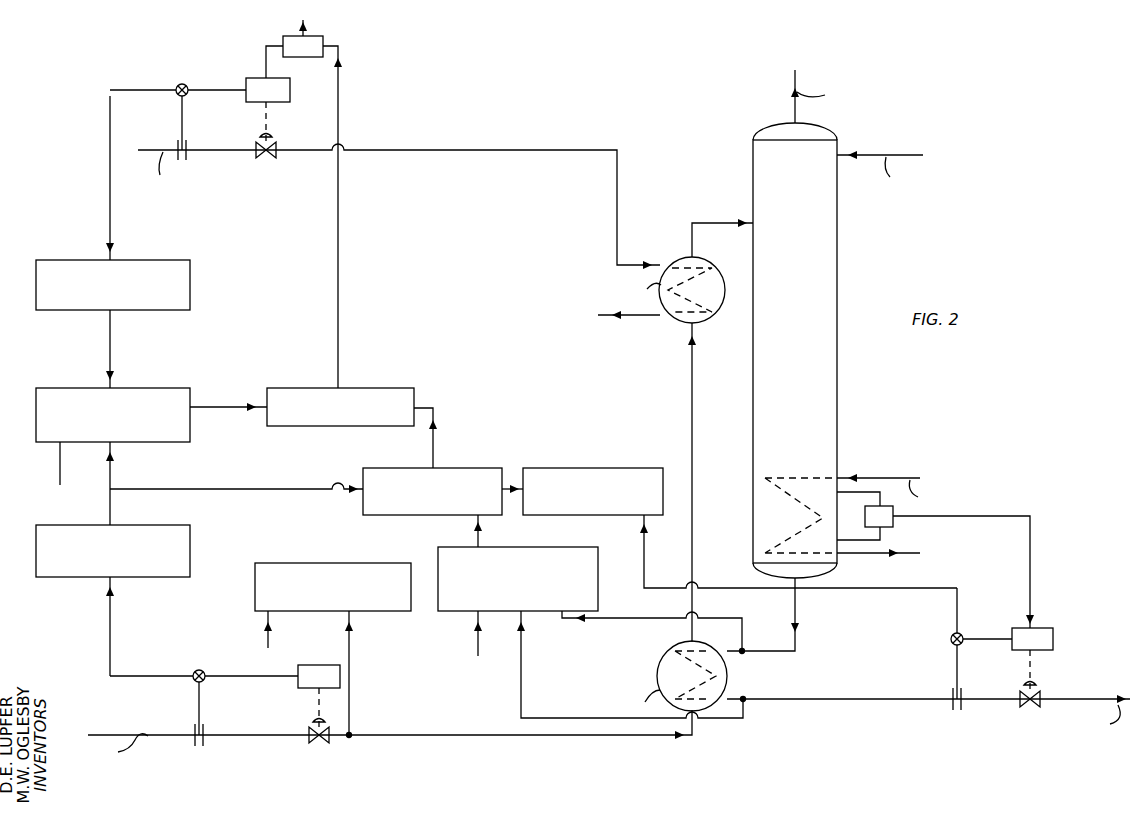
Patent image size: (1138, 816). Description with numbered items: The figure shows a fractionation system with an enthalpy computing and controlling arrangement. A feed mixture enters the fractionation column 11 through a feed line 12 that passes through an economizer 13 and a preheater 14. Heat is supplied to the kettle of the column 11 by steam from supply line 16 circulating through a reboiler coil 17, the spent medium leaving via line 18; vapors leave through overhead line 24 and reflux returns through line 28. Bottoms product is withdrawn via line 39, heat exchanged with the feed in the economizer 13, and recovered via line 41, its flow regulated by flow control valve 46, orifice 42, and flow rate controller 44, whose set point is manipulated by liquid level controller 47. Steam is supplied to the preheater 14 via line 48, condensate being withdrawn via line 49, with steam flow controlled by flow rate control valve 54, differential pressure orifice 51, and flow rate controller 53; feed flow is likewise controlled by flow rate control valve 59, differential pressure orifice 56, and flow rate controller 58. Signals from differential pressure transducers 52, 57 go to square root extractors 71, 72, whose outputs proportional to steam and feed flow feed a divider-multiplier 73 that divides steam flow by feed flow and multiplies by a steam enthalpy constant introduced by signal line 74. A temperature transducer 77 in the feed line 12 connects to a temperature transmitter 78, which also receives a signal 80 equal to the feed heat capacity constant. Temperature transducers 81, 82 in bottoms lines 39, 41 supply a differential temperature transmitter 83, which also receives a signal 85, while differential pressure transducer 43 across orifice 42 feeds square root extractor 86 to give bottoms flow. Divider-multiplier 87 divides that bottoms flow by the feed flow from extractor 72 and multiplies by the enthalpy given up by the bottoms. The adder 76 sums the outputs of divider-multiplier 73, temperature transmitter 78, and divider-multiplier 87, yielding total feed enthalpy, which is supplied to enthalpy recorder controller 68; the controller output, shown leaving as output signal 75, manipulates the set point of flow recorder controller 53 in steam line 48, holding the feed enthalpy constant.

The fractionation column 11 is at (753, 147).
The feed line 12 is at (445, 736).
The economizer 13 is at (700, 710).
The preheater 14 is at (718, 312).
The supply line 16 is at (887, 478).
The reboiler coil 17 is at (820, 478).
The line 18 is at (895, 556).
The overhead line 24 is at (790, 97).
The reflux line 28 is at (900, 155).
The bottoms product line 39 is at (800, 632).
The bottoms product line 41 is at (802, 702).
The orifice 42 is at (950, 712).
The differential pressure transducer 43 is at (951, 643).
The flow rate controller 44 is at (1050, 628).
The flow control valve 46 is at (1020, 705).
The liquid level controller 47 is at (893, 526).
The steam supply line 48 is at (410, 150).
The condensate line 49 is at (613, 318).
The differential pressure orifice 51 is at (178, 145).
The differential pressure transducer 52 is at (182, 84).
The flow rate controller 53 is at (290, 80).
The flow rate control valve 54 is at (274, 137).
The differential pressure orifice 56 is at (205, 742).
The differential pressure transducer 57 is at (196, 670).
The flow rate controller 58 is at (330, 665).
The flow rate control valve 59 is at (311, 743).
The enthalpy recorder controller 68 is at (283, 40).
The square root extractor 71 is at (185, 295).
The square root extractor 72 is at (180, 540).
The divider-multiplier 73 is at (178, 440).
The signal line 74 is at (58, 459).
The output signal 75 is at (308, 27).
The adder 76 is at (410, 395).
The temperature transducer 77 is at (350, 740).
The temperature transmitter 78 is at (378, 563).
The signal 80 is at (263, 645).
The temperature transducer 81 is at (745, 655).
The temperature transducer 82 is at (745, 705).
The differential temperature transmitter 83 is at (588, 553).
The signal 85 is at (475, 648).
The square root extractor 86 is at (650, 468).
The divider-multiplier 87 is at (487, 468).